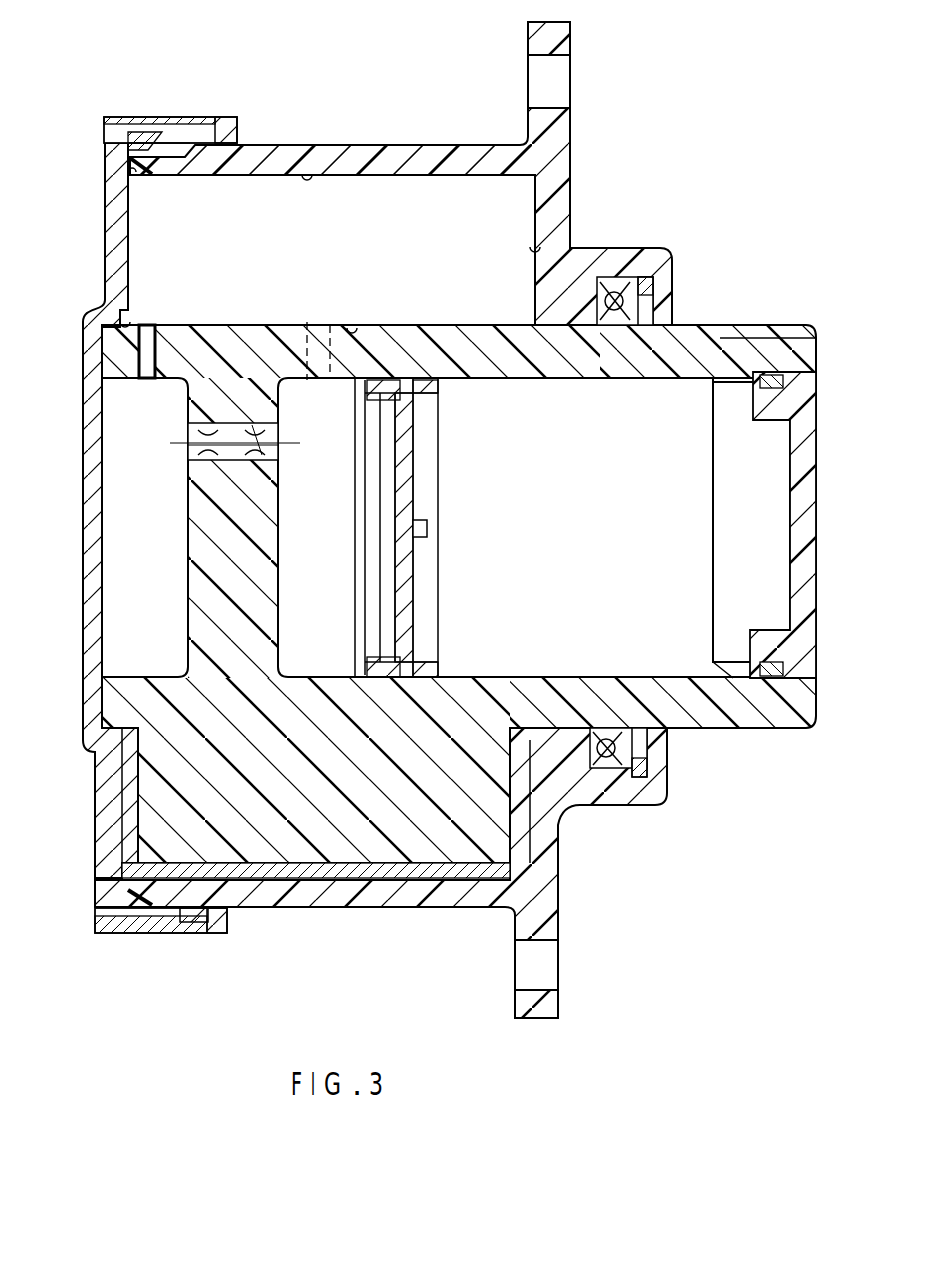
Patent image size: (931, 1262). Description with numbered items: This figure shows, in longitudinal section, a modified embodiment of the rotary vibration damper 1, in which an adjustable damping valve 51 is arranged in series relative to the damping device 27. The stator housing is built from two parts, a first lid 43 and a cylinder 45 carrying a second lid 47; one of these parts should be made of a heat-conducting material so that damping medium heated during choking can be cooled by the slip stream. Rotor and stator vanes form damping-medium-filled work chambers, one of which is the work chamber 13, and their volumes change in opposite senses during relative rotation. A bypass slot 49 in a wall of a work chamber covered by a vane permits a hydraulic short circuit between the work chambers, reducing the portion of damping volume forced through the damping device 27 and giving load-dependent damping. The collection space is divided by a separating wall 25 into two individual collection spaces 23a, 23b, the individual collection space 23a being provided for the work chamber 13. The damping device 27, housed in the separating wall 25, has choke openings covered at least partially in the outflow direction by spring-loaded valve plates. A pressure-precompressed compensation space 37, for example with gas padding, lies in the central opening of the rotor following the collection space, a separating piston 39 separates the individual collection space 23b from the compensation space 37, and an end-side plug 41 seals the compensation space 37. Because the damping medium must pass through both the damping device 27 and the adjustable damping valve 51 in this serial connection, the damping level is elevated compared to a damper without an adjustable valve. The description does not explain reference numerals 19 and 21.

The rotary vibration damper 1 is at (439, 550).
The work chamber 13 is at (224, 128).
The port 19 is at (147, 354).
The axis 21 is at (313, 320).
The individual collection space 23a is at (120, 641).
The individual collection space 23b is at (312, 660).
The separating wall 25 is at (207, 402).
The damping device 27 is at (190, 447).
The compensation space 37 is at (640, 423).
The separating piston 39 is at (407, 432).
The end-side plug 41 is at (795, 400).
The first lid 43 is at (118, 222).
The cylinder 45 is at (325, 153).
The second lid 47 is at (560, 203).
The bypass slot 49 is at (570, 247).
The adjustable damping valve 51 is at (268, 452).